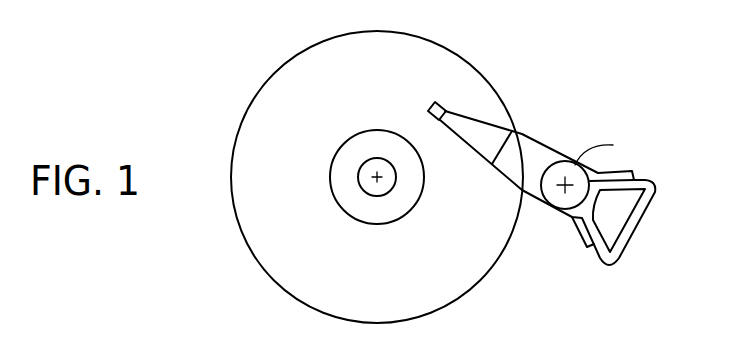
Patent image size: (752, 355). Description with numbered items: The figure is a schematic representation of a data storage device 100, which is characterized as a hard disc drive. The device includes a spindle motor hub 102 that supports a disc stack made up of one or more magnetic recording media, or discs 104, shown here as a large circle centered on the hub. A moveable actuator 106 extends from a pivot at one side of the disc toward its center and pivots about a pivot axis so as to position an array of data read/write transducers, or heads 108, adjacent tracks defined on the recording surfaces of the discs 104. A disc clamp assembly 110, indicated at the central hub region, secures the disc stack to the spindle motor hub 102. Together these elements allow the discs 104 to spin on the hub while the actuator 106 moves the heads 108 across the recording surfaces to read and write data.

The data storage device 100 is at (213, 83).
The spindle motor hub 102 is at (377, 157).
The magnetic recording media (discs) 104 is at (453, 290).
The moveable actuator 106 is at (520, 148).
The data read/write transducers (heads) 108 is at (427, 108).
The disc clamp assembly 110 is at (334, 186).